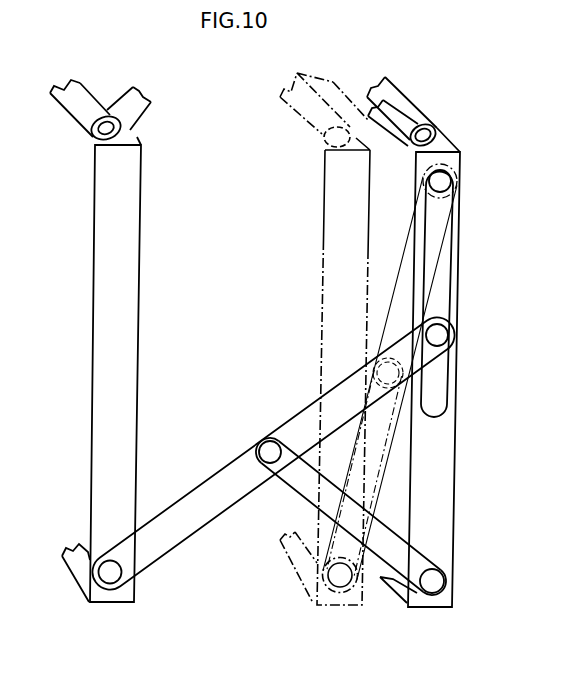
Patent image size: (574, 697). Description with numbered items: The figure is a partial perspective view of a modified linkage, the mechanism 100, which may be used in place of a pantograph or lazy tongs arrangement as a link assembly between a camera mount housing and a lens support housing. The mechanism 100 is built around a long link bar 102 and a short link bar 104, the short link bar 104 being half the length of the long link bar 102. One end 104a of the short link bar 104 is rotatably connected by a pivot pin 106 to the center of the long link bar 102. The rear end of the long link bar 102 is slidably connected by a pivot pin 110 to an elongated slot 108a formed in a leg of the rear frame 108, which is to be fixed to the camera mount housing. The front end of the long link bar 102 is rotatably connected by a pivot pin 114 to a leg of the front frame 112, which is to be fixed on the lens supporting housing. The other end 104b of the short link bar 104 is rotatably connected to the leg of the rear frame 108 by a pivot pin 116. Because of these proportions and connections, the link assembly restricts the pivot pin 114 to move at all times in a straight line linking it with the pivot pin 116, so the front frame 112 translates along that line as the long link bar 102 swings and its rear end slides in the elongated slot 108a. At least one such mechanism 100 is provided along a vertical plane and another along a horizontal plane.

The mechanism 100 is at (231, 446).
The long link bar 102 is at (187, 500).
The short link bar 104 is at (375, 542).
The one end of short link bar 104a is at (280, 478).
The other end of short link bar 104b is at (418, 554).
The pivot pin 106 is at (278, 452).
The rear frame 108 is at (442, 458).
The elongated slot 108a is at (444, 258).
The pivot pin 110 is at (438, 333).
The front frame 112 is at (100, 228).
The pivot pin 114 is at (114, 573).
The pivot pin 116 is at (432, 581).